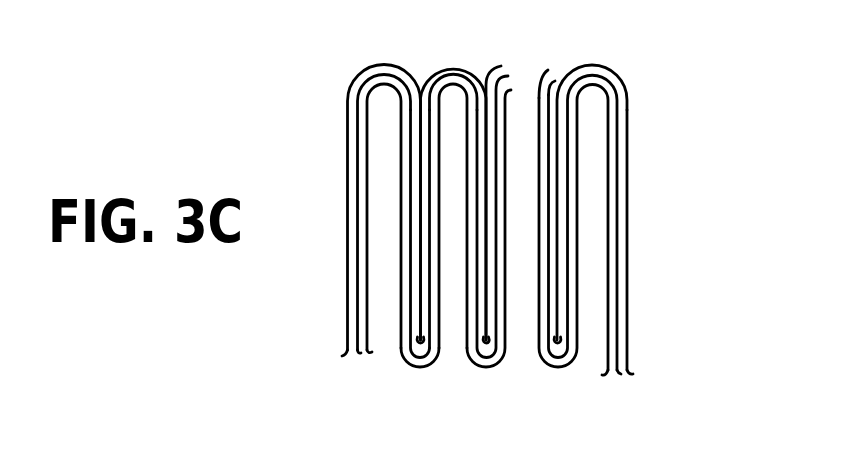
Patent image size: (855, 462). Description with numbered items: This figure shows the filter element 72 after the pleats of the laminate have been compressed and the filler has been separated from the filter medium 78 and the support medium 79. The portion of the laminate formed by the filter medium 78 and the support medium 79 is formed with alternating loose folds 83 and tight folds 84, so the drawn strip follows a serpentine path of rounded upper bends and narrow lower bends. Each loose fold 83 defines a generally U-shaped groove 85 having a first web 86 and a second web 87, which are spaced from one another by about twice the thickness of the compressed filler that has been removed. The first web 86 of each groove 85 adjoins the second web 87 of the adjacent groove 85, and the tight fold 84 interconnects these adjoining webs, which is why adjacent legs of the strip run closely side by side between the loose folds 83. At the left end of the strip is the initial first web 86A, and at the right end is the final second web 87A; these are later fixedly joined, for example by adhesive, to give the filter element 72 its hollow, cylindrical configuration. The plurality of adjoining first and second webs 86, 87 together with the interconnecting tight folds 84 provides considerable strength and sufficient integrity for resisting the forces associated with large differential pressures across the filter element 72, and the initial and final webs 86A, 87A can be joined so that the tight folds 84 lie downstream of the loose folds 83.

The filter element 72 is at (598, 58).
The filter medium 78 is at (384, 82).
The support medium 79 is at (368, 65).
The loose fold 83 is at (455, 73).
The tight fold 84 is at (415, 363).
The U-shaped groove 85 is at (458, 96).
The first web 86 is at (429, 293).
The initial first web 86A is at (347, 135).
The second web 87 is at (407, 152).
The final second web 87A is at (627, 203).